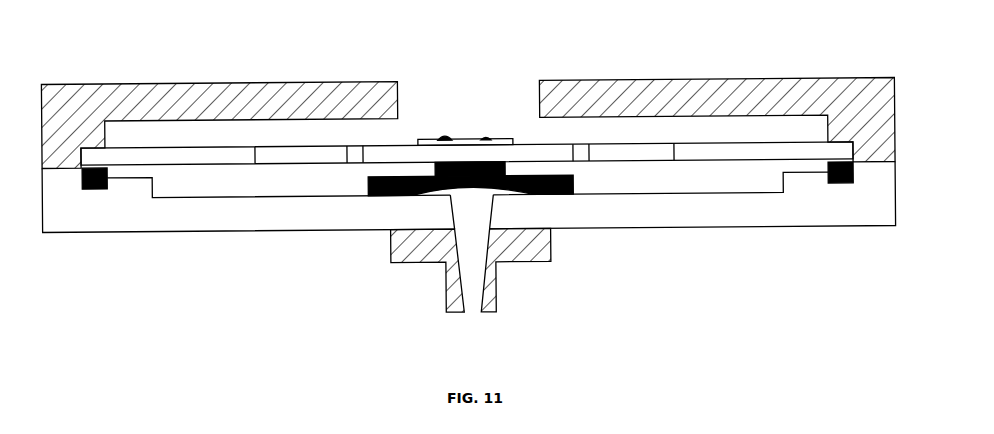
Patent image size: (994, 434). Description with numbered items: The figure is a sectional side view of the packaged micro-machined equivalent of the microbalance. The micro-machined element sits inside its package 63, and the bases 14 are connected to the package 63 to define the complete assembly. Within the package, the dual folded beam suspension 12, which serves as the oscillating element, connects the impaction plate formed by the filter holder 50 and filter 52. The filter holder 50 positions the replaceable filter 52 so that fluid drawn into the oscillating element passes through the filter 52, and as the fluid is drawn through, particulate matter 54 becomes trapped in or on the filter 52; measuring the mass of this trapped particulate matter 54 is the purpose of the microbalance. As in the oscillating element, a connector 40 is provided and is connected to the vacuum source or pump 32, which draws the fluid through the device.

The dual folded beam suspension 12 is at (308, 147).
The base 14 is at (95, 190).
The vacuum source or pump 32 is at (467, 310).
The connector 40 is at (497, 305).
The filter holder 50 is at (507, 137).
The filter 52 is at (550, 77).
The particulate matter 54 is at (463, 137).
The package 63 is at (737, 79).